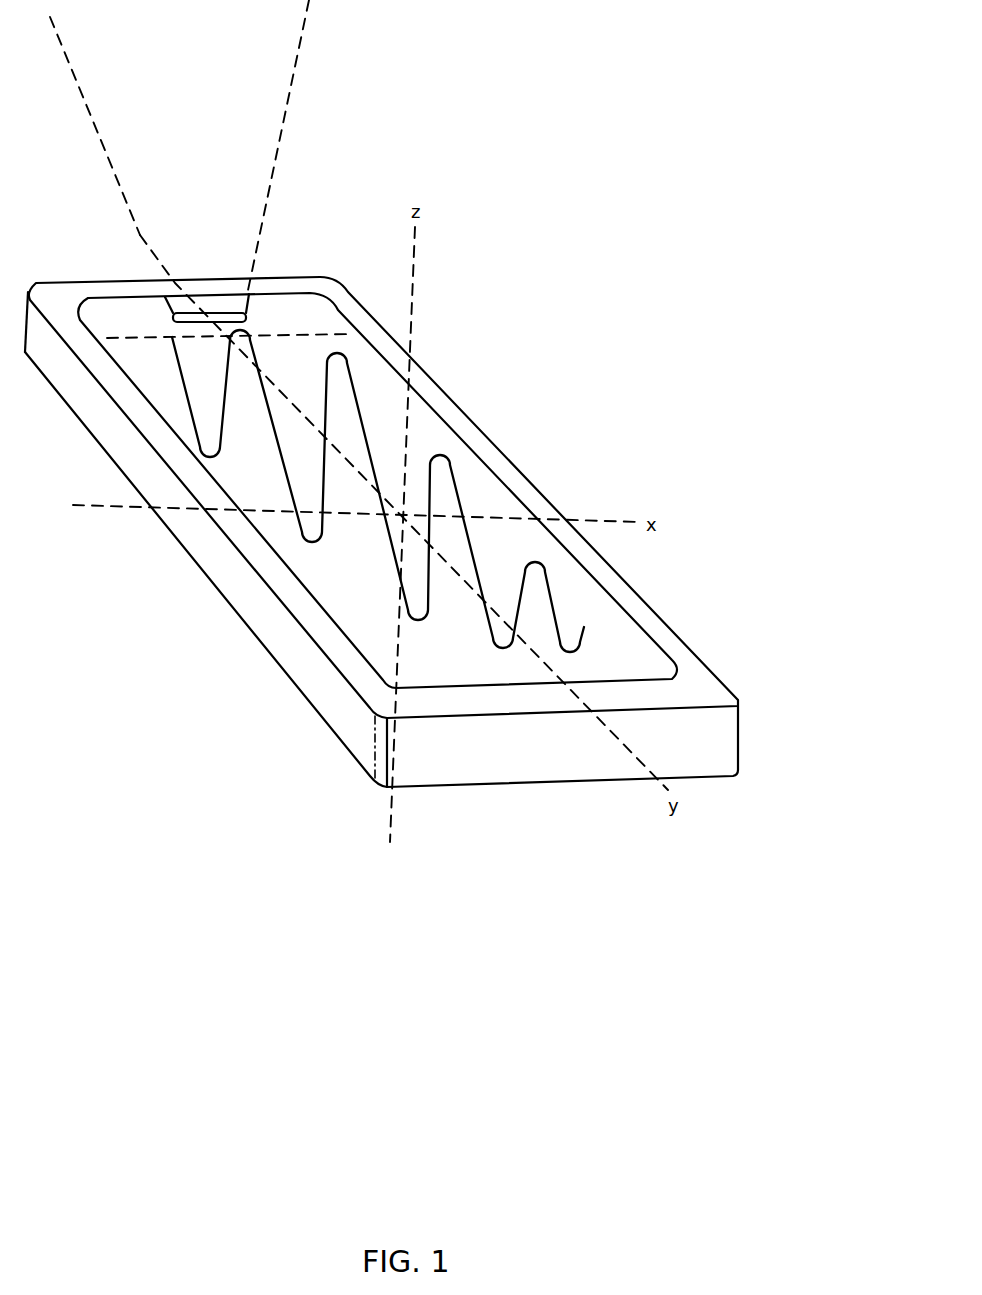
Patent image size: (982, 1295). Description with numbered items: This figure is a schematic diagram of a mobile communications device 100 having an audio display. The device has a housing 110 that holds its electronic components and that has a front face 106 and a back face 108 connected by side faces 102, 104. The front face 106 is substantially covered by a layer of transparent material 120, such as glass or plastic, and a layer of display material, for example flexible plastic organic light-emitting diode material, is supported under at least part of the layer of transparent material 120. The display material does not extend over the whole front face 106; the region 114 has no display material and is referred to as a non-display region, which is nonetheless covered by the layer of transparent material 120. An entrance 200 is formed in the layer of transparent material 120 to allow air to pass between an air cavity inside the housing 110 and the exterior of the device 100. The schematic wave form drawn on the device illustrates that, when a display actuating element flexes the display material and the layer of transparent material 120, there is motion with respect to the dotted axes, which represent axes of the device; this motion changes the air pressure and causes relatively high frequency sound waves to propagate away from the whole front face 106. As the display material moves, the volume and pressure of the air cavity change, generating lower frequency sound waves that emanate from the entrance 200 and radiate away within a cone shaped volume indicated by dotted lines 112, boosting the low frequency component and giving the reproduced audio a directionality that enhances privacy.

The mobile communications device 100 is at (712, 283).
The side face 102 is at (553, 762).
The side face 104 is at (230, 583).
The front face 106 is at (712, 682).
The back face 108 is at (708, 780).
The housing 110 is at (740, 737).
The dotted lines 112 is at (72, 68).
The non-display region 114 is at (310, 313).
The layer of transparent material 120 is at (483, 478).
The entrance 200 is at (228, 310).